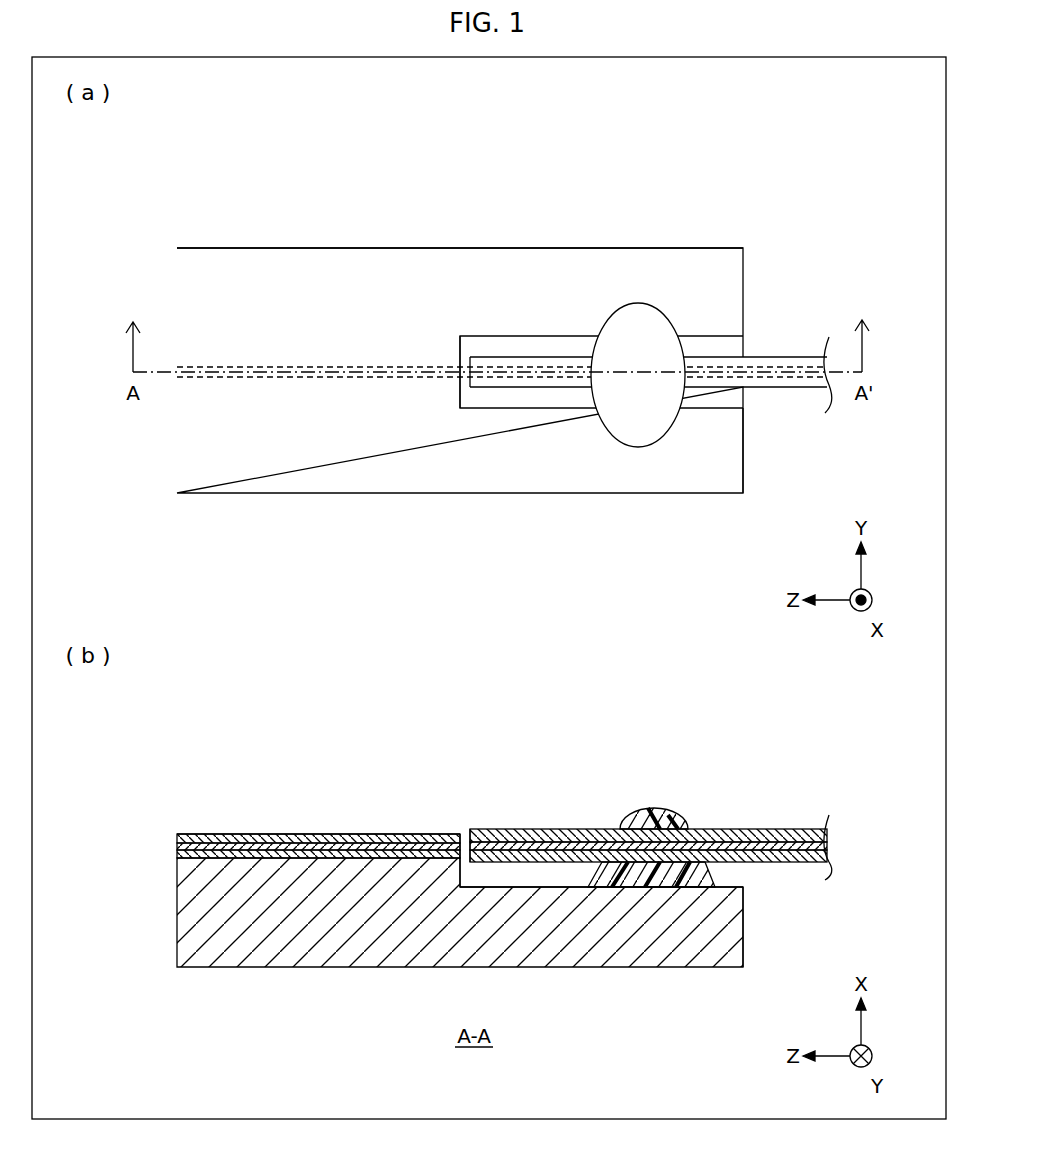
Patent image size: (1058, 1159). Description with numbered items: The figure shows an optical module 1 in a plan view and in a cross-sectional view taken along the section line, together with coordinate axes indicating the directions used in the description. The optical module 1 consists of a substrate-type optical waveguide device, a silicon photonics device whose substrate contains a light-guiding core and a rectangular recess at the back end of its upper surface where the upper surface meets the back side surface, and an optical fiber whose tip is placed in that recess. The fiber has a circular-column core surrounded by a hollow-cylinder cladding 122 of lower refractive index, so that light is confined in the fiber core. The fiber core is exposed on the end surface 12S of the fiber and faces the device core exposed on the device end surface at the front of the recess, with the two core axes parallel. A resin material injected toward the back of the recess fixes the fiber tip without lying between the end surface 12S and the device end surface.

The optical module 1 is at (158, 192).
The end surface 12S is at (460, 408).
The cladding 122 is at (827, 858).